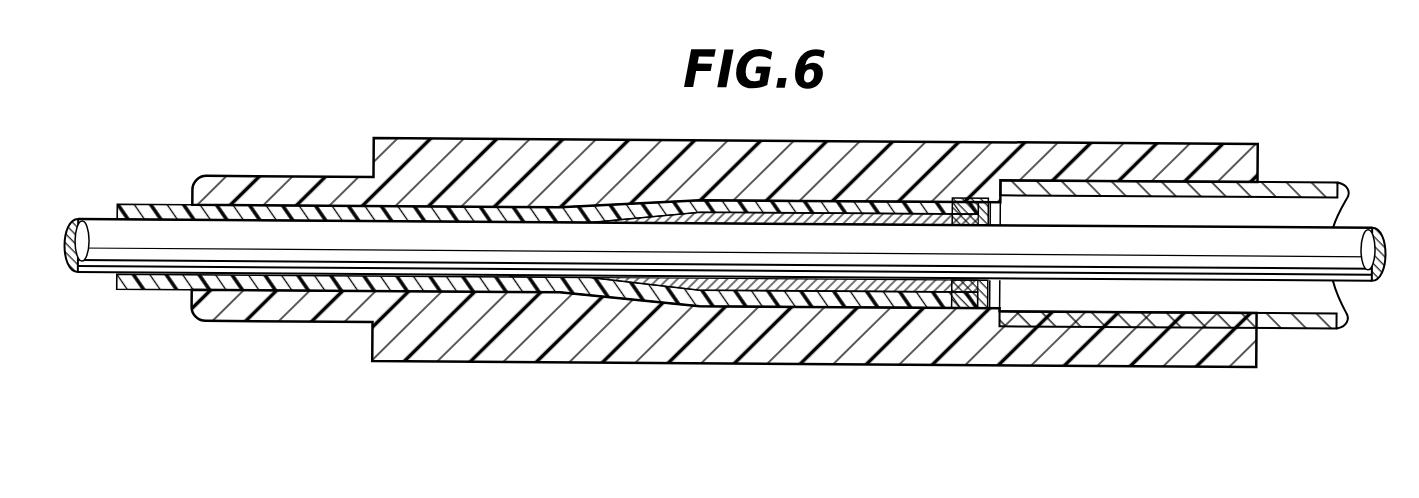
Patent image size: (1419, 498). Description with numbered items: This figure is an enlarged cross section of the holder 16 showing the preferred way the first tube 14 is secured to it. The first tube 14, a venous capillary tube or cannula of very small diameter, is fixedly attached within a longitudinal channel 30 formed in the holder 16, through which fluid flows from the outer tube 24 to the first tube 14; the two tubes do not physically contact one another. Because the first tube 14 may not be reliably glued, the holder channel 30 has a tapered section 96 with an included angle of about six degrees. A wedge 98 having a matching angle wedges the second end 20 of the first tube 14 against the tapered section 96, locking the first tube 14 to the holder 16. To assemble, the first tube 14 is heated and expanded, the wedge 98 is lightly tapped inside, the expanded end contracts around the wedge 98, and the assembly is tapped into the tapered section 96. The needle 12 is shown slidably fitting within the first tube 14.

The needle 12 is at (1347, 226).
The first tube 14 is at (168, 208).
The holder 16 is at (480, 137).
The second end 20 is at (988, 306).
The outer tube 24 is at (1290, 184).
The longitudinal channel 30 is at (993, 289).
The tapered section 96 is at (993, 198).
The wedge 98 is at (886, 292).